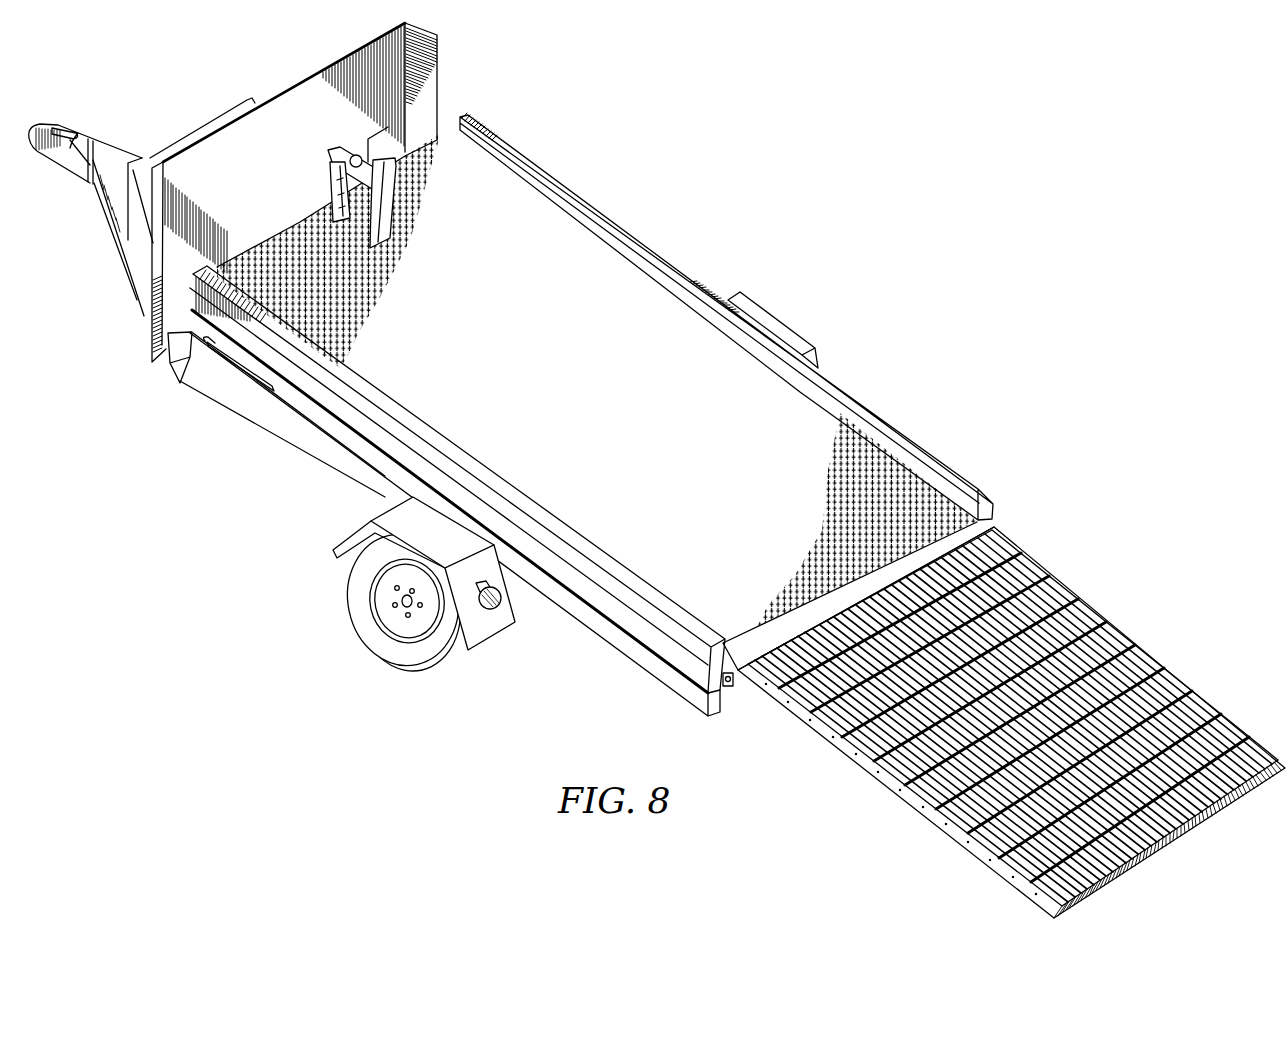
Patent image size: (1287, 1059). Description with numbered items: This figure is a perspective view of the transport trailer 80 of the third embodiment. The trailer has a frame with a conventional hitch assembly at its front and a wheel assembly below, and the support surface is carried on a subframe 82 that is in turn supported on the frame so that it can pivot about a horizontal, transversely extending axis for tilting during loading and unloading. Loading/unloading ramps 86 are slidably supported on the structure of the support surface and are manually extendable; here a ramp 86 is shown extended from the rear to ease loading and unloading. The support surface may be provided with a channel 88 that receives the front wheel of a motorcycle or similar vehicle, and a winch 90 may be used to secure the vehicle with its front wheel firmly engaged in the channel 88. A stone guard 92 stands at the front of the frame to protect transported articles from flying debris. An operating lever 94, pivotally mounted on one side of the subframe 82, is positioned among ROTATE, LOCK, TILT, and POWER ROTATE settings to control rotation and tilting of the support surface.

The stone guard 92 is at (268, 184).
The winch 90 is at (352, 143).
The channel 88 is at (400, 198).
The transport trailer 80 is at (727, 269).
The operating lever 94 is at (220, 370).
The subframe 82 is at (347, 437).
The loading/unloading ramps 86 is at (1136, 650).